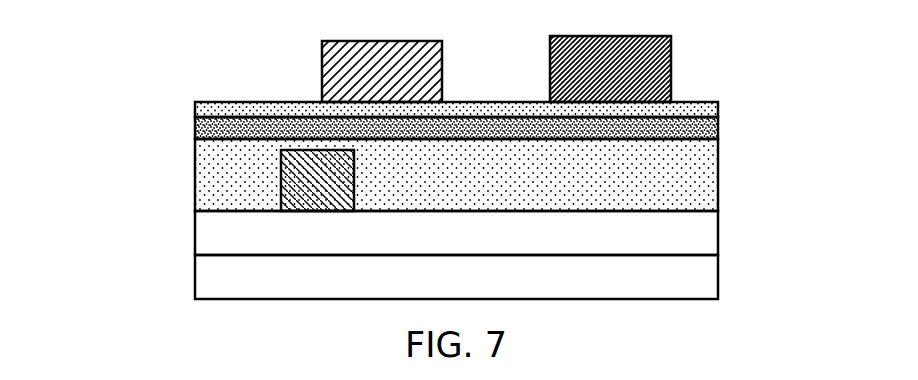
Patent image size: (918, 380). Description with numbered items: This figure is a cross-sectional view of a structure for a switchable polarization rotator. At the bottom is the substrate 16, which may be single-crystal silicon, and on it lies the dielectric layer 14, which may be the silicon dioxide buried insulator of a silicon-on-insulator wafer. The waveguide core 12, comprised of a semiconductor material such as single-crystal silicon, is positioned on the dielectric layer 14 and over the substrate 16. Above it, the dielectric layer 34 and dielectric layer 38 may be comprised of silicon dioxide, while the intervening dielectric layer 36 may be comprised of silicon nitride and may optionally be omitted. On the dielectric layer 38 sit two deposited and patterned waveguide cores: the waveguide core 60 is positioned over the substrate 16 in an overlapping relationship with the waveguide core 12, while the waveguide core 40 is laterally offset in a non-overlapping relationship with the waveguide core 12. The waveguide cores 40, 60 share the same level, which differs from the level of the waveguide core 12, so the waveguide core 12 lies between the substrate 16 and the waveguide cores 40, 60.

The waveguide core 12 is at (300, 176).
The dielectric layer 14 is at (220, 232).
The substrate 16 is at (222, 283).
The dielectric layer 34 is at (696, 170).
The dielectric layer 36 is at (245, 126).
The dielectric layer 38 is at (696, 110).
The waveguide core 40 is at (627, 63).
The waveguide core 60 is at (360, 65).